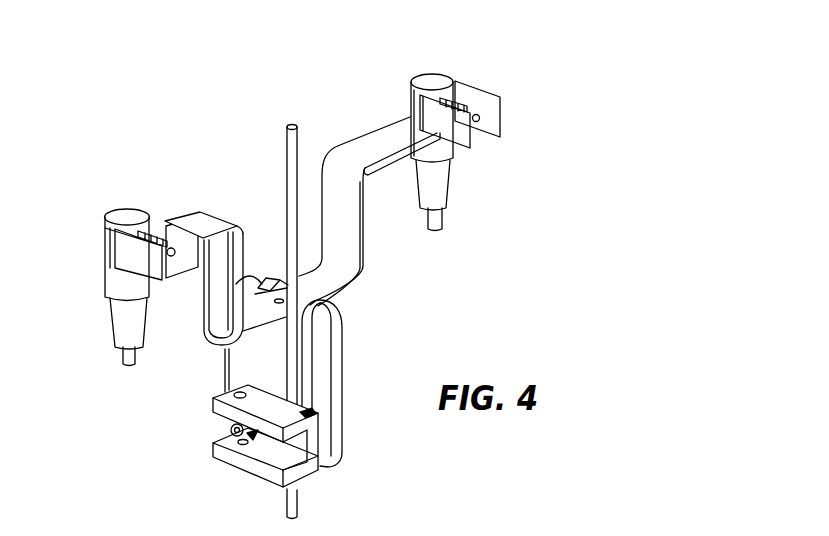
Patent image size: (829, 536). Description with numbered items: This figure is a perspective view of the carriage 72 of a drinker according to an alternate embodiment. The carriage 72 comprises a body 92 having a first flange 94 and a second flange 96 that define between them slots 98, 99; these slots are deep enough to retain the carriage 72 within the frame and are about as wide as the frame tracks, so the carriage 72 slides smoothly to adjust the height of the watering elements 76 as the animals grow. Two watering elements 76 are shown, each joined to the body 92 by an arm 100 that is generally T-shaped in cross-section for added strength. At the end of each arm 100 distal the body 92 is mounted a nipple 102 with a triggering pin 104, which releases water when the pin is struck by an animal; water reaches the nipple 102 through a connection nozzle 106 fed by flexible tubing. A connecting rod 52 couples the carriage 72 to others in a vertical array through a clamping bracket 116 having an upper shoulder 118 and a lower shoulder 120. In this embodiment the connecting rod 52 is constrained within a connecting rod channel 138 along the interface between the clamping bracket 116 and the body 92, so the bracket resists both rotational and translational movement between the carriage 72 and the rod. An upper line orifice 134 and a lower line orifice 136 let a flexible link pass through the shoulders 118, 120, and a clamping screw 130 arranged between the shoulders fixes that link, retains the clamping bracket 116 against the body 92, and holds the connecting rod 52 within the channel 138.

The connecting rod 52 is at (298, 500).
The carriage 72 is at (106, 433).
The watering element 76 is at (98, 182).
The body 92 is at (257, 270).
The first flange 94 is at (232, 367).
The second flange 96 is at (344, 345).
The slot 98 is at (329, 390).
The slot 99 is at (207, 287).
The arm 100 is at (233, 217).
The nipple 102 is at (122, 320).
The triggering pin 104 is at (127, 365).
The connection nozzle 106 is at (166, 230).
The clamping bracket 116 is at (320, 444).
The upper shoulder 118 is at (218, 411).
The lower shoulder 120 is at (245, 463).
The clamping screw 130 is at (229, 431).
The upper line orifice 134 is at (234, 393).
The lower line orifice 136 is at (236, 443).
The connecting rod channel 138 is at (317, 413).